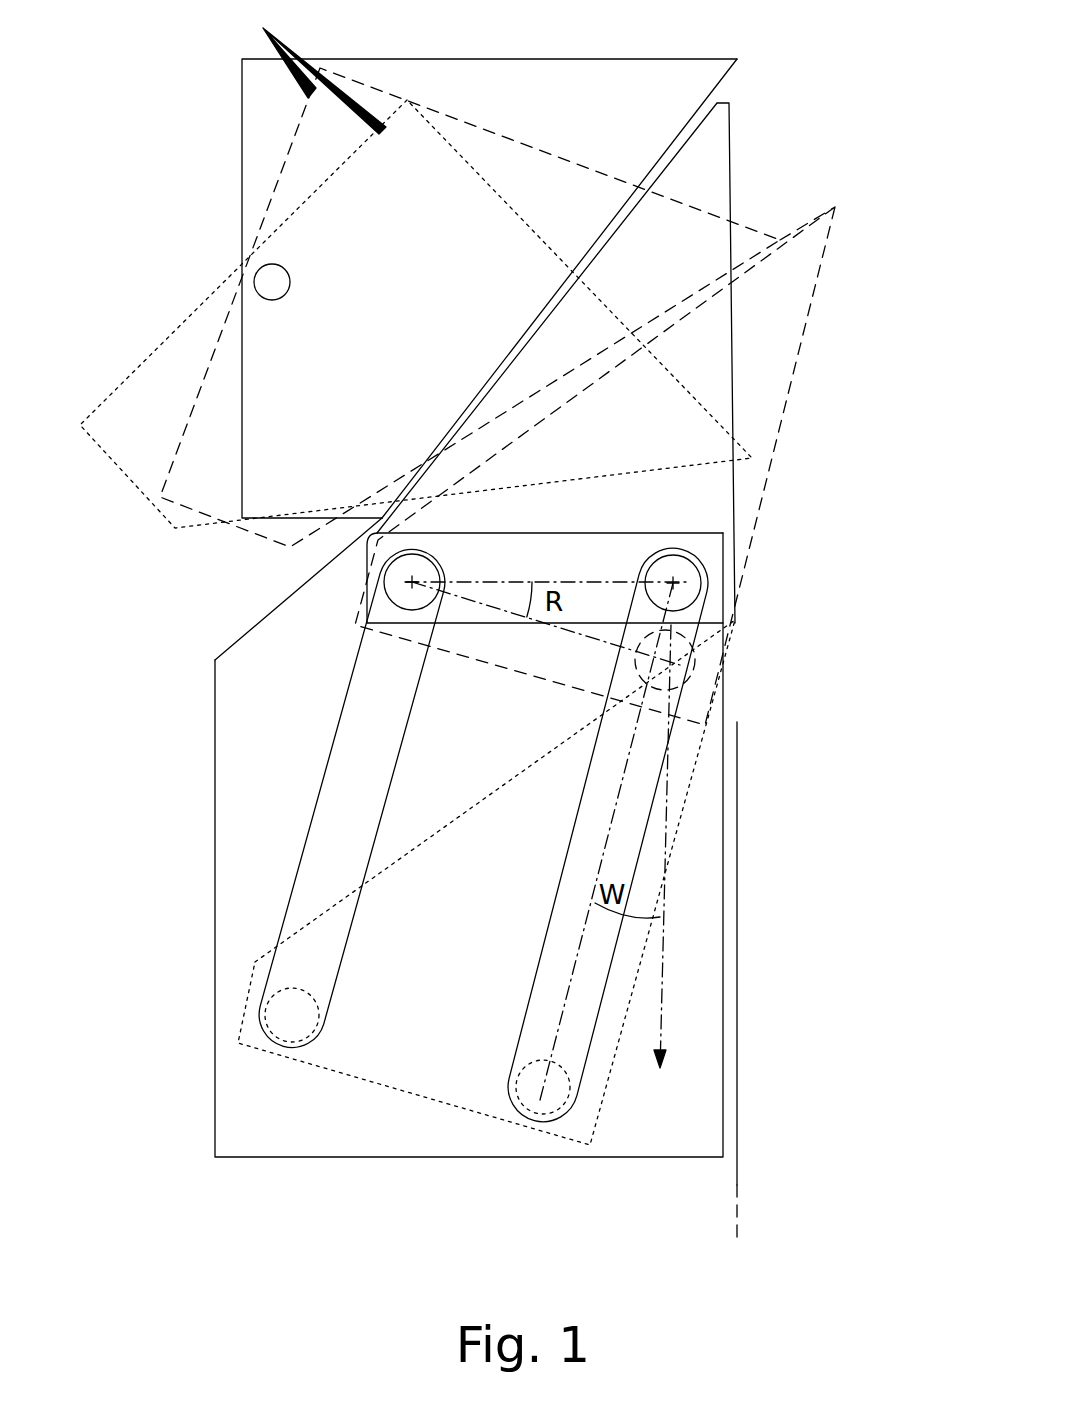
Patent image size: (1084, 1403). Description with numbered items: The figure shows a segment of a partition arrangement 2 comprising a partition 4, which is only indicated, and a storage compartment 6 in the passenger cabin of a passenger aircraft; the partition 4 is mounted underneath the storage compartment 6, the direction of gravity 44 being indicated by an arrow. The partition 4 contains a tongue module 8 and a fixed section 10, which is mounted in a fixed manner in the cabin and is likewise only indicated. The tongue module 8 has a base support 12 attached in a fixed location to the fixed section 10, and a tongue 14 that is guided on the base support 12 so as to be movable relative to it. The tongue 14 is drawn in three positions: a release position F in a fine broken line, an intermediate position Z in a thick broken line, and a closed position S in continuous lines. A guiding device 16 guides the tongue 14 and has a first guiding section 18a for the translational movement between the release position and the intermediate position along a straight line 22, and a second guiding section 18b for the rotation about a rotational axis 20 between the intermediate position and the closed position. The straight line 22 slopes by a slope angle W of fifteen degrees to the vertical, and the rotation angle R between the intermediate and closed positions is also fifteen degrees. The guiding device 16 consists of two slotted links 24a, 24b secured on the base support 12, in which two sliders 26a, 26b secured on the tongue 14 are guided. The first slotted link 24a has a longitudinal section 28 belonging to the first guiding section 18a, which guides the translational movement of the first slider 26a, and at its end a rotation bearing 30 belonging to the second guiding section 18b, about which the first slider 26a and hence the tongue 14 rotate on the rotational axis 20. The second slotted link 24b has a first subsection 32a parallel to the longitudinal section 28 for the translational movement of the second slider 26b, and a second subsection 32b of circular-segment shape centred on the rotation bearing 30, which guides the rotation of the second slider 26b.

The partition arrangement 2 is at (208, 1244).
The partition 4 is at (884, 50).
The storage compartment 6 is at (319, 67).
The tongue module 8 is at (190, 613).
The fixed section 10 is at (740, 983).
The base support 12 is at (215, 1113).
The tongue 14 is at (735, 143).
The guiding device 16 is at (408, 845).
The first guiding section 18a is at (813, 894).
The second guiding section 18b is at (785, 587).
The rotational axis 20 is at (479, 562).
The straight line 22 is at (633, 768).
The first slotted link 24a is at (321, 799).
The second slotted link 24b is at (678, 868).
The first slider 26a is at (387, 598).
The second slider 26b is at (672, 555).
The longitudinal section 28 is at (420, 695).
The rotation bearing 30 is at (443, 558).
The first subsection 32a is at (650, 833).
The second subsection 32b is at (705, 600).
The direction of gravity 44 is at (661, 1023).